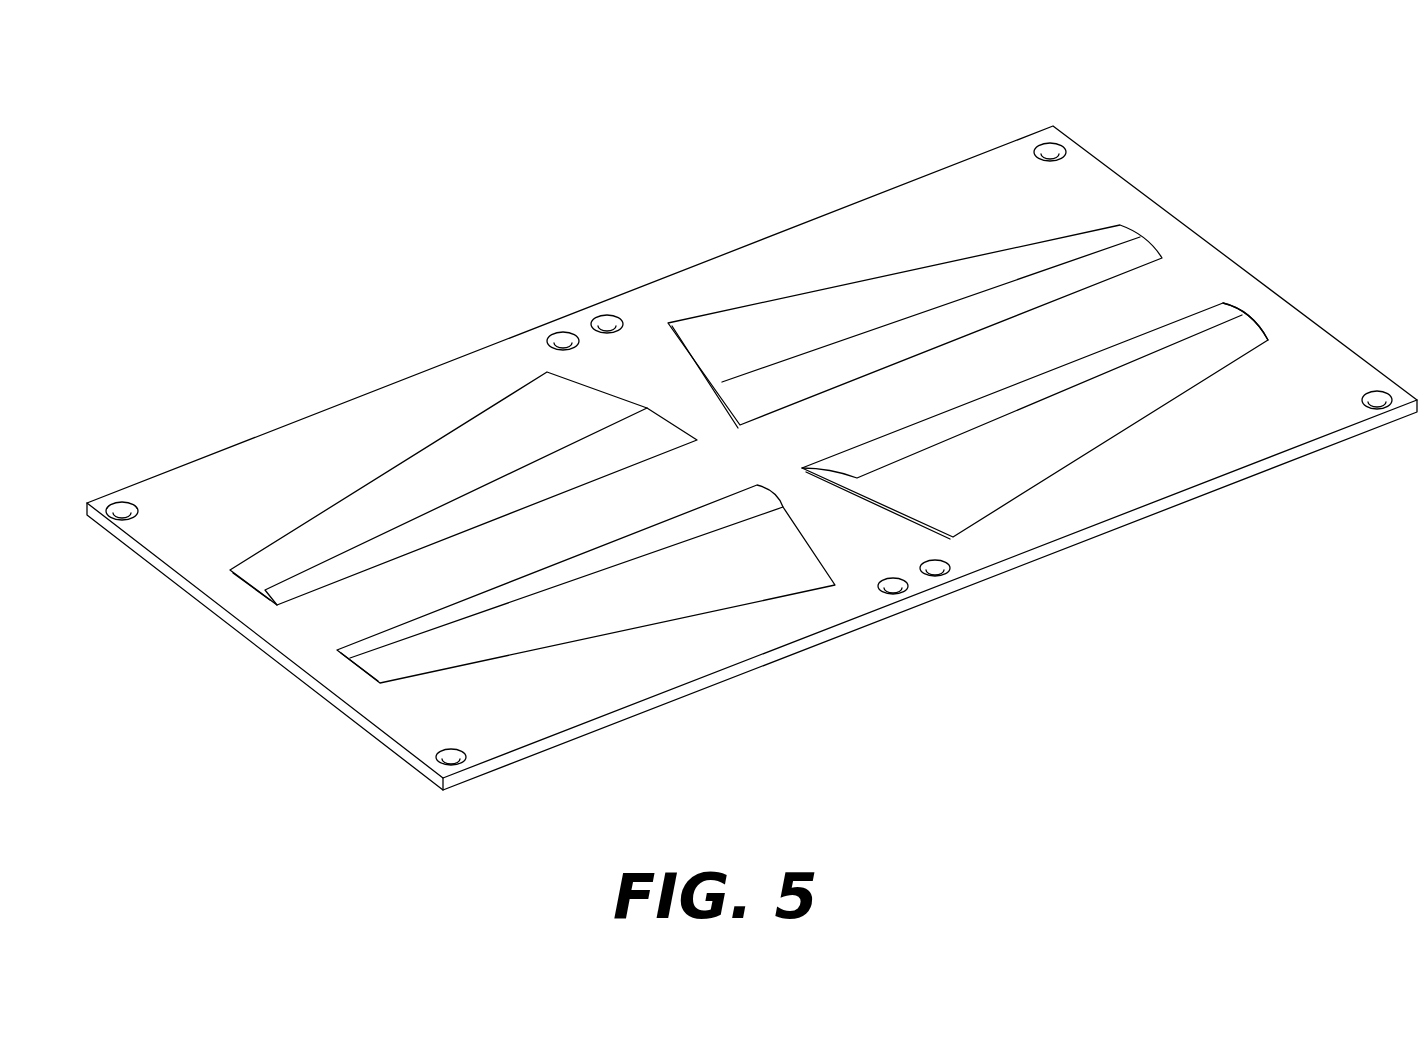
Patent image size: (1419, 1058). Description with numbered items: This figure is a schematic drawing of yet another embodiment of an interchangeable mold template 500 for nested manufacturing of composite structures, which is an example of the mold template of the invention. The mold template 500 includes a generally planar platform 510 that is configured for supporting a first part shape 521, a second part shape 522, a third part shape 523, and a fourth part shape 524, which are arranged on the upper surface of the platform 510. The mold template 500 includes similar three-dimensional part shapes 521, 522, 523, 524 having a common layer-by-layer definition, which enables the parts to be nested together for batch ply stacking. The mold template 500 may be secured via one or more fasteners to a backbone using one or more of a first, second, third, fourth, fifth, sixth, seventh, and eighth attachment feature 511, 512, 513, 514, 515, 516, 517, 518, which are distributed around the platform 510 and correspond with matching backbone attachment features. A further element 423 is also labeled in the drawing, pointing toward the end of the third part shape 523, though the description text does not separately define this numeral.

The mold template 500 is at (262, 167).
The generally planar platform 510 is at (323, 445).
The first attachment feature 511 is at (105, 517).
The second attachment feature 512 is at (563, 332).
The third attachment feature 513 is at (605, 315).
The fourth attachment feature 514 is at (1053, 125).
The fifth attachment feature 515 is at (1378, 408).
The sixth attachment feature 516 is at (943, 578).
The seventh attachment feature 517 is at (895, 592).
The eighth attachment feature 518 is at (455, 767).
The first part shape 521 is at (475, 455).
The second part shape 522 is at (928, 288).
The third part shape 523 is at (1020, 458).
The fourth part shape 524 is at (405, 665).
The air deflecting fin 423 is at (1222, 347).